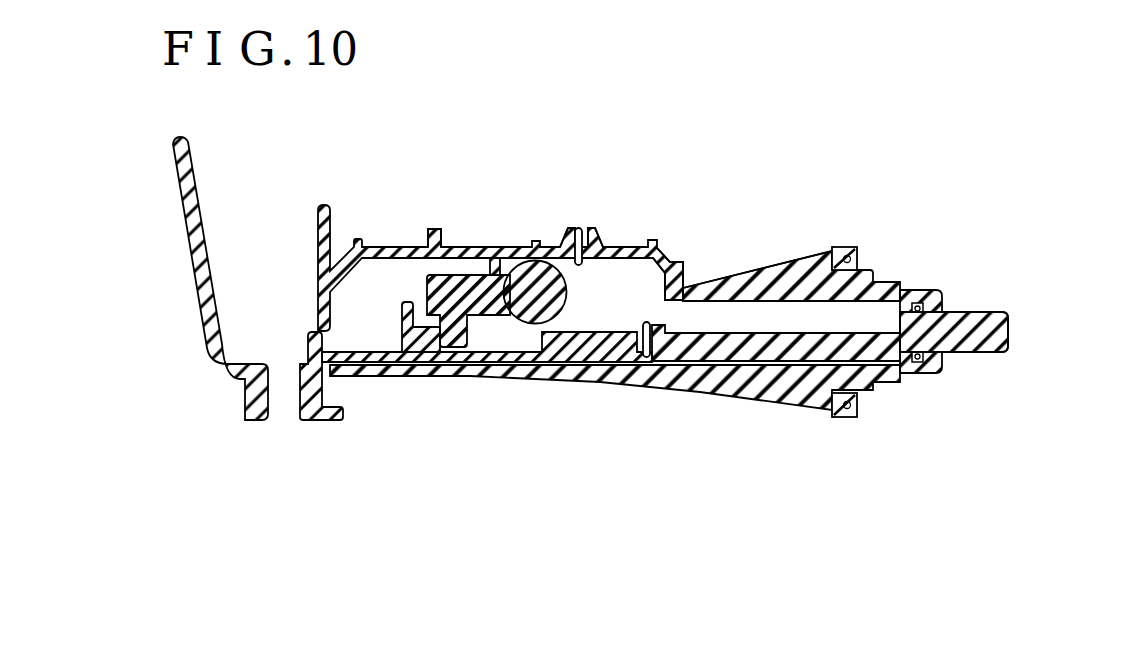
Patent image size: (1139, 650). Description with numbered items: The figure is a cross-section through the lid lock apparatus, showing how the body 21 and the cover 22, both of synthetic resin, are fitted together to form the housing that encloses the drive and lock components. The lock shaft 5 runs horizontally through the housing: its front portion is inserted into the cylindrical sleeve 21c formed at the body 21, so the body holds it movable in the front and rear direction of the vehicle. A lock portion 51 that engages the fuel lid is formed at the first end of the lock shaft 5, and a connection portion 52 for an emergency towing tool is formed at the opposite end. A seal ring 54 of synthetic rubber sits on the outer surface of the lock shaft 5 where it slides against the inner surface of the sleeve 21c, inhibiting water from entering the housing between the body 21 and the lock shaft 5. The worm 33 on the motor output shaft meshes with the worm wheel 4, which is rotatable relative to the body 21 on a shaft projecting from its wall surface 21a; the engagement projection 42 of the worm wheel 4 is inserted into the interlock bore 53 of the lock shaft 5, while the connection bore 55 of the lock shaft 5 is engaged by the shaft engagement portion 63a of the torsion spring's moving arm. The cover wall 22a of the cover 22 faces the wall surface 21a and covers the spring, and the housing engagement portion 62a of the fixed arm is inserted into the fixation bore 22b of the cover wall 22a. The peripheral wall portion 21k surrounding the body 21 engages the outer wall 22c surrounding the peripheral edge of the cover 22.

The connection portion 52 is at (173, 159).
The cover 22 is at (372, 248).
The worm wheel 4 is at (423, 248).
The cover wall 22a is at (473, 248).
The fixation bore 22b is at (583, 228).
The housing engagement portion 62a is at (588, 252).
The peripheral wall portion 21k is at (682, 260).
The outer wall 22c is at (685, 279).
The cylindrical sleeve 21c is at (790, 266).
The lock portion 51 is at (1010, 334).
The lock shaft 5 is at (314, 421).
The wall surface 21a is at (392, 346).
The engagement projection 42 is at (453, 347).
The interlock bore 53 is at (545, 338).
The worm 33 is at (558, 306).
The connection bore 55 is at (648, 340).
The shaft engagement portion 63a is at (665, 346).
The body 21 is at (806, 405).
The seal ring 54 is at (920, 363).